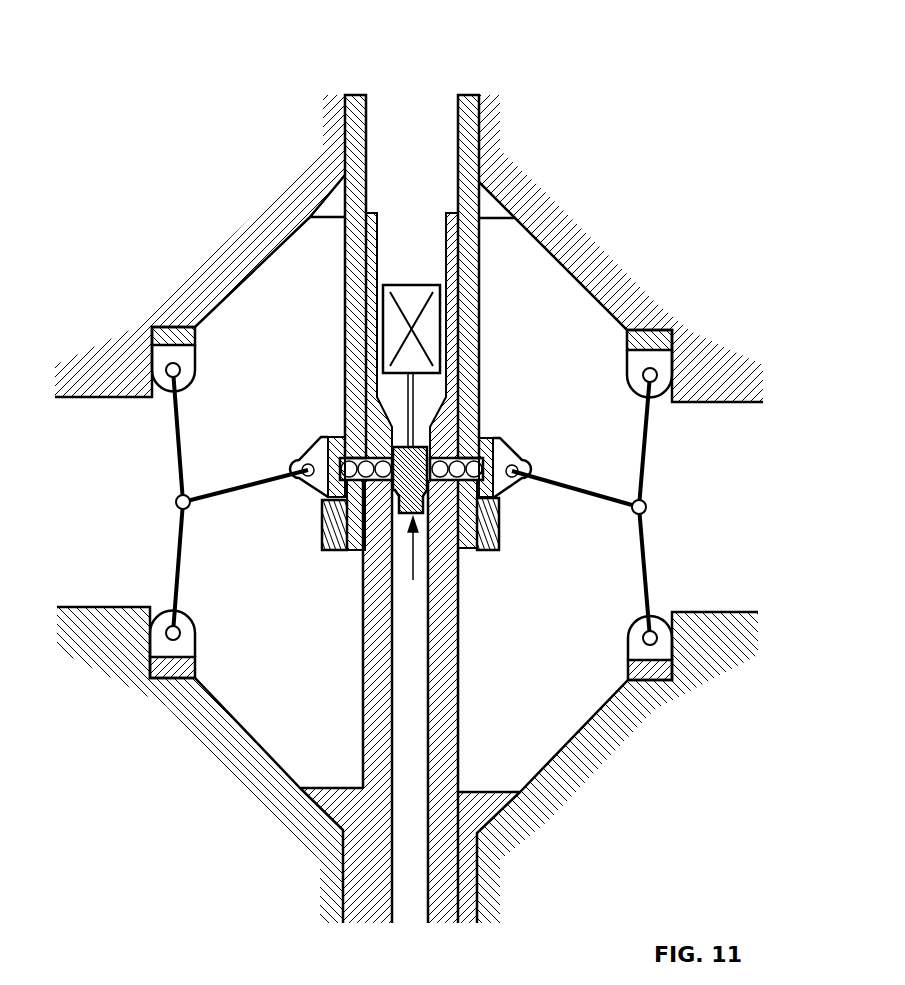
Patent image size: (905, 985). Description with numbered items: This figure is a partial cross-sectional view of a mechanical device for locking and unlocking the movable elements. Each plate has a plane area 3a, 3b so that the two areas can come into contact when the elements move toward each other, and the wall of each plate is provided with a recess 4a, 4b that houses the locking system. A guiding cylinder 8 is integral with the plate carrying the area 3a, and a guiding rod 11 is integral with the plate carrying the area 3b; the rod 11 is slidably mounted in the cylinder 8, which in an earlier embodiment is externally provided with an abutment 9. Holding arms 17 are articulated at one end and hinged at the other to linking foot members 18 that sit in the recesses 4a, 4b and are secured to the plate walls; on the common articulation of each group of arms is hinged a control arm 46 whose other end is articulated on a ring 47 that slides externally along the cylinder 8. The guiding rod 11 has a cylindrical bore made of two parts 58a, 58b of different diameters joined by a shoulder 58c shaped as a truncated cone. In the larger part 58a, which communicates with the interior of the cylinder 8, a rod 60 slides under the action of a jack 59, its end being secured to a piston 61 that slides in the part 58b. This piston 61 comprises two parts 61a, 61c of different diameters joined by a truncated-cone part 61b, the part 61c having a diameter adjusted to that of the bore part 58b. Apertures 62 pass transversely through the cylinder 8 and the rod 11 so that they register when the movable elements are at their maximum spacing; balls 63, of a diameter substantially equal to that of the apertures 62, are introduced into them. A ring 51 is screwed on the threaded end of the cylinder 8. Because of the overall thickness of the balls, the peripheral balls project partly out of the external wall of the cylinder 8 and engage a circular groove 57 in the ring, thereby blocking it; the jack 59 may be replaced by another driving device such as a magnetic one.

The guiding cylinder 8 is at (467, 117).
The abutment 9 is at (493, 202).
The recess 4a is at (525, 248).
The linking foot member 18 is at (660, 327).
The holding arm 17 is at (650, 418).
The plane area 3a is at (115, 372).
The control arm 46 is at (240, 490).
The ball 63 is at (315, 487).
The ring 51 is at (332, 522).
The aperture 62 is at (325, 548).
The bore part of greatest diameter 58a is at (398, 254).
The bore part of smaller diameter 58b is at (363, 633).
The shoulder 58c is at (352, 404).
The recess 4b is at (263, 760).
The plane area 3b is at (62, 716).
The jack 59 is at (428, 318).
The rod 60 is at (417, 388).
The piston 61 is at (410, 523).
The piston part 61a is at (462, 535).
The truncated-cone piston part 61b is at (498, 520).
The piston part 61c is at (465, 430).
The ring 47 is at (495, 460).
The circular groove 57 is at (520, 453).
The guiding rod 11 is at (453, 877).